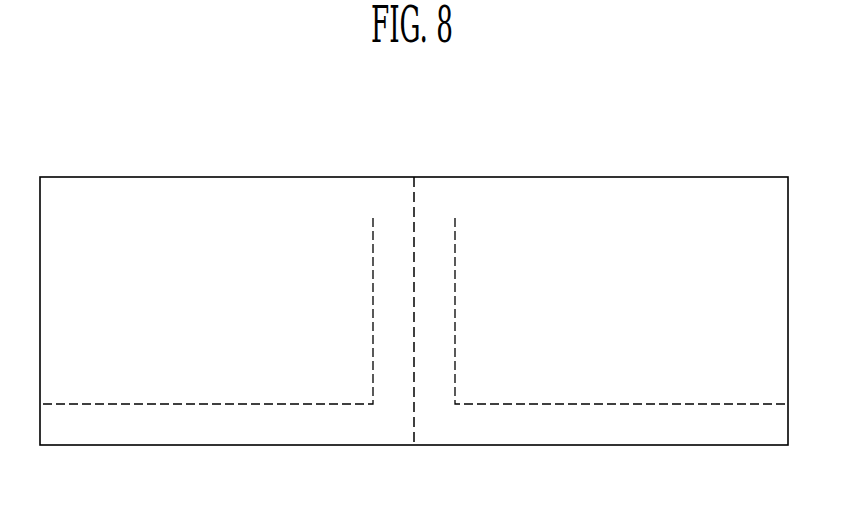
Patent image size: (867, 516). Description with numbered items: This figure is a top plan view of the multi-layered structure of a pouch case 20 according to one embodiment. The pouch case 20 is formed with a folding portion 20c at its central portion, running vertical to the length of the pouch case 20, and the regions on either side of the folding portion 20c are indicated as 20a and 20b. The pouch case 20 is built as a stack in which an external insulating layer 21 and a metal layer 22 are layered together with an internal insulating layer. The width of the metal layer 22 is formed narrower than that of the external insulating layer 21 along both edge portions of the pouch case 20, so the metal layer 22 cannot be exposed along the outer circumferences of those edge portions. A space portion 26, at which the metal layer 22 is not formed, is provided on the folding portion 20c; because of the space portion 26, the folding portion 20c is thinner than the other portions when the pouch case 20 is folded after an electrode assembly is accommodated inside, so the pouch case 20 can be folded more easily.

The pouch case 20 is at (585, 88).
The first display region 20a is at (269, 171).
The second display region 20b is at (579, 171).
The folding portion 20c is at (412, 240).
The external insulating layer 21 is at (693, 197).
The metal layer 22 is at (680, 368).
The space portion 26 is at (438, 366).